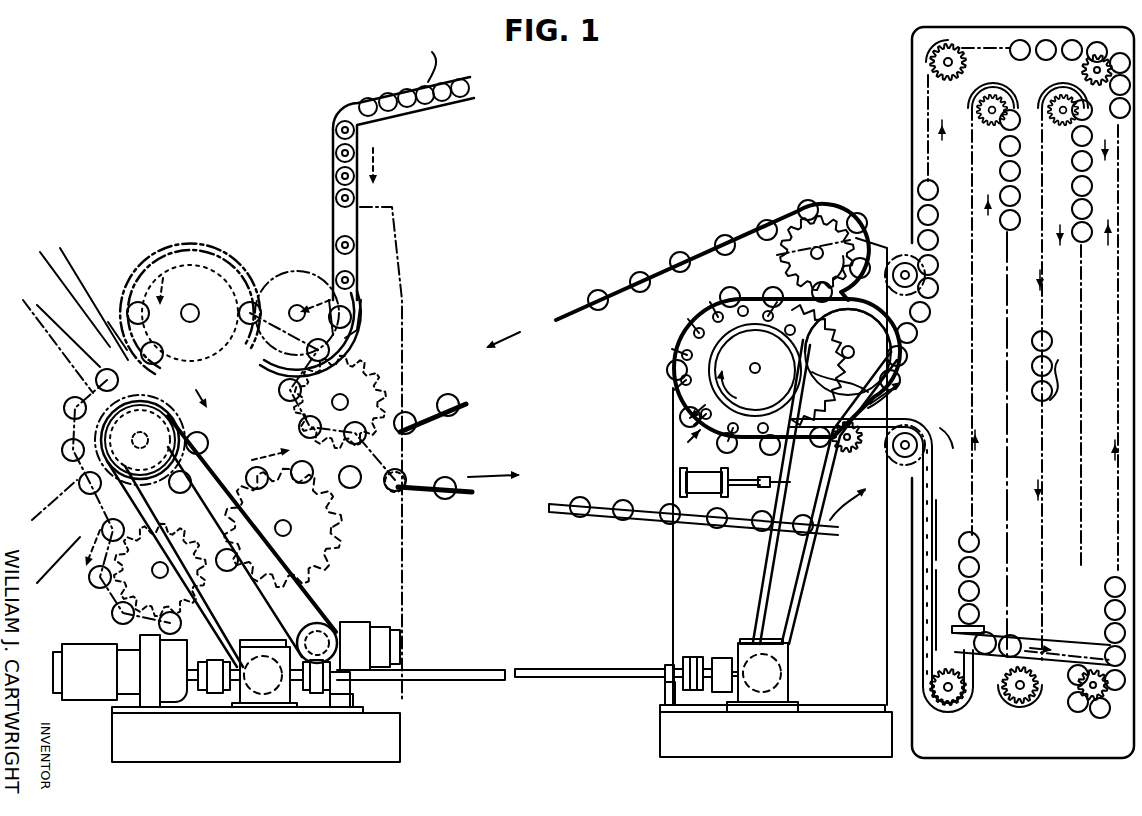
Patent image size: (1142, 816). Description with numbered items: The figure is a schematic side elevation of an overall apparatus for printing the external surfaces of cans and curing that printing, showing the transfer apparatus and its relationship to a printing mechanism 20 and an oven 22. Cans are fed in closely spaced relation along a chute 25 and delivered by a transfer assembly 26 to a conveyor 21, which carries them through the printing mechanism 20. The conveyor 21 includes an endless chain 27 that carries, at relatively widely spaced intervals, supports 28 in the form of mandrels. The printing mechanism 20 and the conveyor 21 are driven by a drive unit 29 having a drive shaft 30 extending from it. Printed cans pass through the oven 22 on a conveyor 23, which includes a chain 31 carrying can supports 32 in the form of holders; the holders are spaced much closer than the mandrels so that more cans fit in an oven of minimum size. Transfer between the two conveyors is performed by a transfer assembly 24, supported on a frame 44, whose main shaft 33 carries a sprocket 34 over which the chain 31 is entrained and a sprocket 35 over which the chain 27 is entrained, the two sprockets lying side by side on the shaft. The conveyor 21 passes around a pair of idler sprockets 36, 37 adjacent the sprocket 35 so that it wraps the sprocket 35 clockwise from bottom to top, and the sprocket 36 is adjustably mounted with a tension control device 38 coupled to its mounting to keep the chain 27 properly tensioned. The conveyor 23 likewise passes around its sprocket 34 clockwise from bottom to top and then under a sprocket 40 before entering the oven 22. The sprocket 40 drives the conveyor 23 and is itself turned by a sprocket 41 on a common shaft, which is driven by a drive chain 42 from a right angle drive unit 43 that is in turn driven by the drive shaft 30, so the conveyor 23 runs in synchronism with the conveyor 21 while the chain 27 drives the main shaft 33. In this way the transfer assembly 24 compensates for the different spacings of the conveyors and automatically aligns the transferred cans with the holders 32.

The printing mechanism 20 is at (418, 585).
The conveyor 21 is at (553, 516).
The oven 22 is at (925, 82).
The conveyor 23 is at (936, 500).
The transfer assembly 24 is at (682, 405).
The chute 25 is at (405, 115).
The transfer assembly 26 is at (166, 252).
The endless chain 27 is at (468, 492).
The supports 28 is at (445, 478).
The drive unit 29 is at (216, 702).
The drive shaft 30 is at (462, 662).
The chain 31 is at (934, 556).
The can supports 32 is at (930, 650).
The main shaft 33 is at (777, 365).
The sprocket 34 is at (727, 342).
The sprocket 35 is at (826, 329).
The idler sprocket 36 is at (830, 505).
The idler sprocket 37 is at (832, 223).
The tension control device 38 is at (748, 488).
The sprocket 40 is at (903, 401).
The sprocket 41 is at (903, 369).
The drive chain 42 is at (800, 594).
The right angle drive unit 43 is at (786, 678).
The frame 44 is at (665, 618).